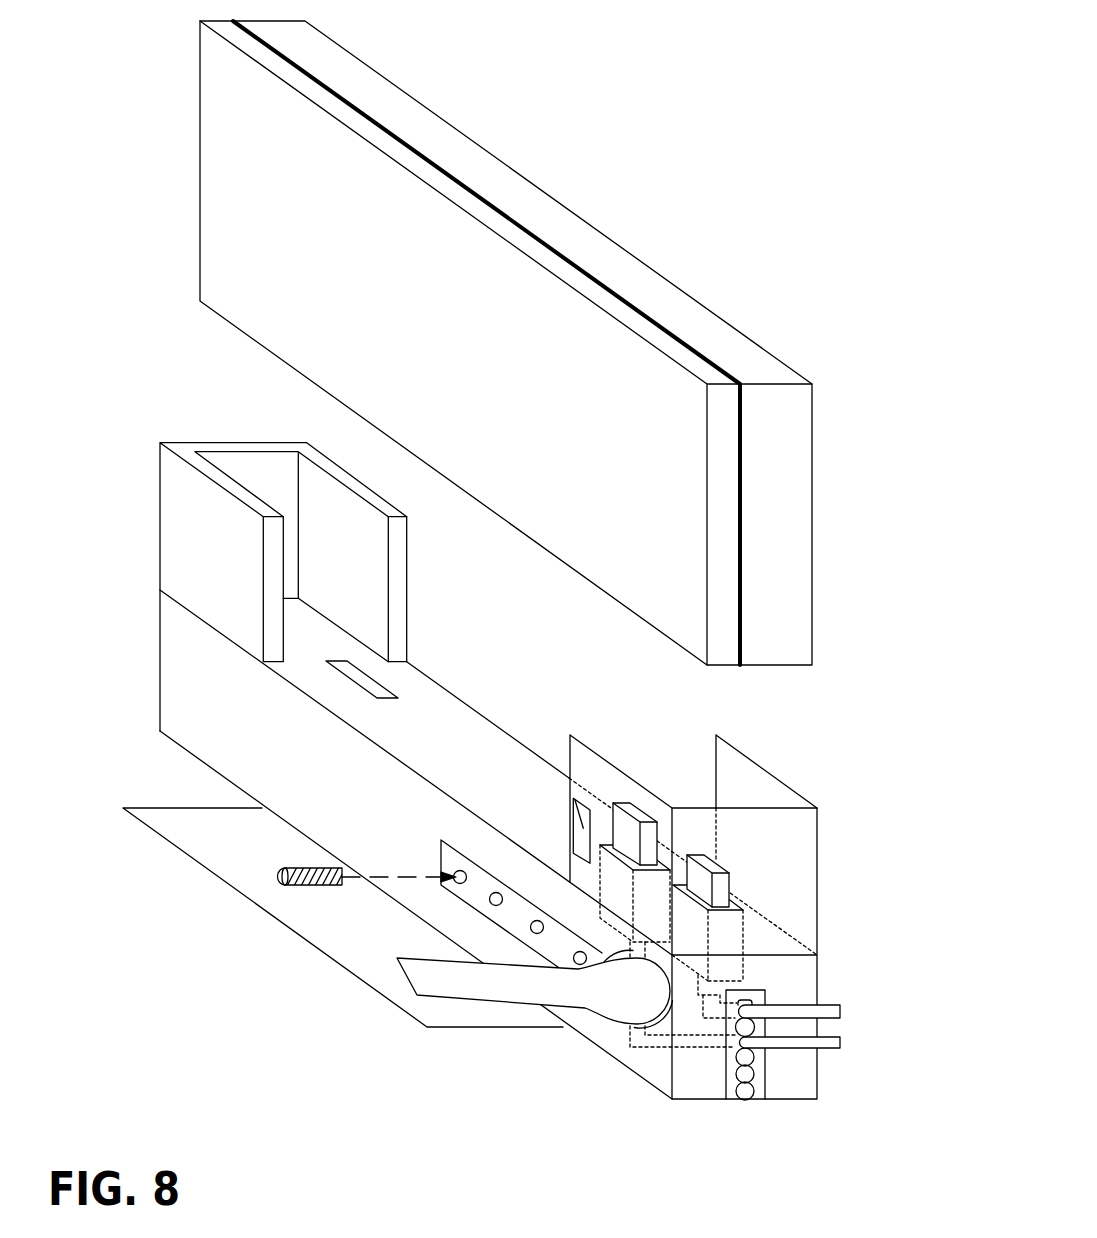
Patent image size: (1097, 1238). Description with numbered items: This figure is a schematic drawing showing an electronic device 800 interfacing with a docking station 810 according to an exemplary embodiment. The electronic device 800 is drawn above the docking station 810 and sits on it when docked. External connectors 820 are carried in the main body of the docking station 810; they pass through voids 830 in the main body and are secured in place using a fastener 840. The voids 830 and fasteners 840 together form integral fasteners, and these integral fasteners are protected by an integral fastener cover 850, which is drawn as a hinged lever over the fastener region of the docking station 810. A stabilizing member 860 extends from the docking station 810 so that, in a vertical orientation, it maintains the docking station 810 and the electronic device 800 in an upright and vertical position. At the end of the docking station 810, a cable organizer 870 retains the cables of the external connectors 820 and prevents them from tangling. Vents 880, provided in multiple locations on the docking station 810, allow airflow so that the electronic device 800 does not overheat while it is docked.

The electronic device 800 is at (558, 202).
The docking station 810 is at (855, 969).
The external connectors 820 is at (705, 860).
The voids 830 is at (742, 935).
The fastener 840 is at (277, 870).
The integral fastener cover 850 is at (483, 1003).
The stabilizing member 860 is at (302, 936).
The cable organizer 870 is at (723, 1068).
The vents 880 is at (567, 777).